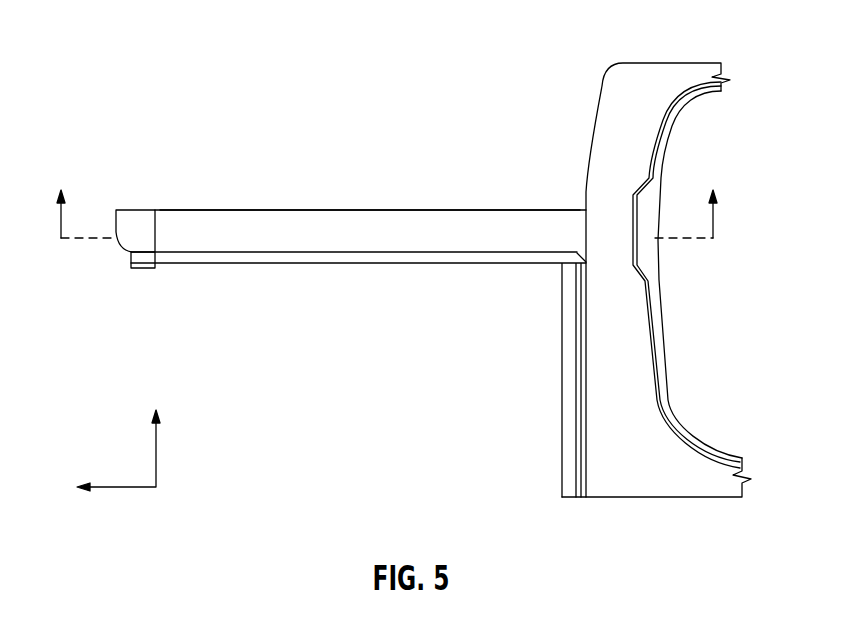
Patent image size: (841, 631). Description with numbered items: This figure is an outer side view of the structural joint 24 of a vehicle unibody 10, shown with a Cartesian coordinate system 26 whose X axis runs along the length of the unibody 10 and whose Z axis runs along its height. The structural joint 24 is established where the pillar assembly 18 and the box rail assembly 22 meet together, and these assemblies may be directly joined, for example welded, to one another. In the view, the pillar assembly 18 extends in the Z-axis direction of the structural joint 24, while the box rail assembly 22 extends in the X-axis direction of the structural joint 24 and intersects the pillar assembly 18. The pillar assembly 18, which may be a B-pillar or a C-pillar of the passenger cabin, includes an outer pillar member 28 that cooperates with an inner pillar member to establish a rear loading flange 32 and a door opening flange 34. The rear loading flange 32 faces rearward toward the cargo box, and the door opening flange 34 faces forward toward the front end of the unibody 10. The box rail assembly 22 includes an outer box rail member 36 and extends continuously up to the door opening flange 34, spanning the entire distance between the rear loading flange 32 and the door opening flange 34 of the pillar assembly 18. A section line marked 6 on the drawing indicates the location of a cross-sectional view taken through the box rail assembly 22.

The unibody 10 is at (560, 70).
The pillar assembly 18 is at (652, 79).
The box rail assembly 22 is at (333, 210).
The structural joint 24 is at (582, 189).
The Cartesian coordinate system 26 is at (170, 540).
The outer pillar member 28 is at (640, 393).
The rear loading flange 32 is at (570, 263).
The door opening flange 34 is at (660, 308).
The outer box rail member 36 is at (395, 219).
The section line 6 is at (387, 199).